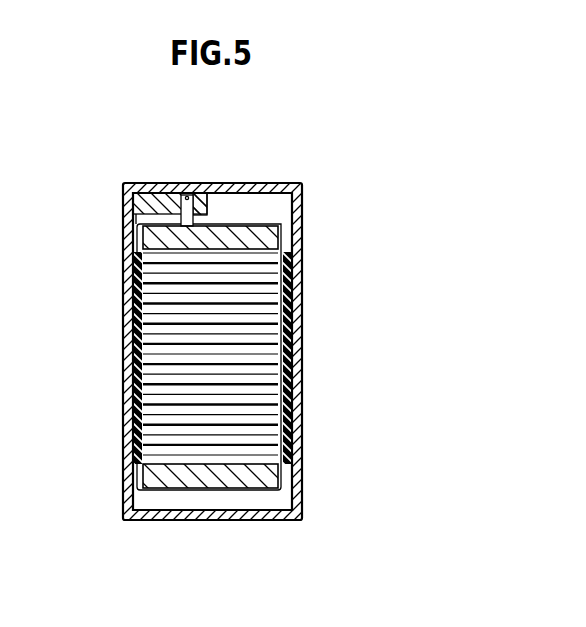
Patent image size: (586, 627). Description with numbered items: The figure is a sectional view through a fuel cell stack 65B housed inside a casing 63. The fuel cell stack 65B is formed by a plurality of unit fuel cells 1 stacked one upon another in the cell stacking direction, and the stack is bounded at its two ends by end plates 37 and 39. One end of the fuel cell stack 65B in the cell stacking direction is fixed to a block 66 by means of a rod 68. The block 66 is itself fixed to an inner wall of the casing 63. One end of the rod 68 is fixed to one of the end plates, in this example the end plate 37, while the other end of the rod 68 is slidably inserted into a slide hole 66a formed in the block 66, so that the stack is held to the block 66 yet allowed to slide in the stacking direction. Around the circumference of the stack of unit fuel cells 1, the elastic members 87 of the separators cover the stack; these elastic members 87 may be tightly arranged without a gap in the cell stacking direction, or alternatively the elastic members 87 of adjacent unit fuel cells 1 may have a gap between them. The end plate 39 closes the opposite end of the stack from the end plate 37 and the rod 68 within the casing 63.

The unit fuel cell 1 is at (273, 302).
The end plate 37 is at (274, 232).
The end plate 39 is at (273, 480).
The casing 63 is at (182, 515).
The fuel cell stack 65B is at (250, 485).
The block 66 is at (152, 196).
The slide hole 66a is at (188, 195).
The rod 68 is at (197, 217).
The elastic member 87 is at (300, 327).